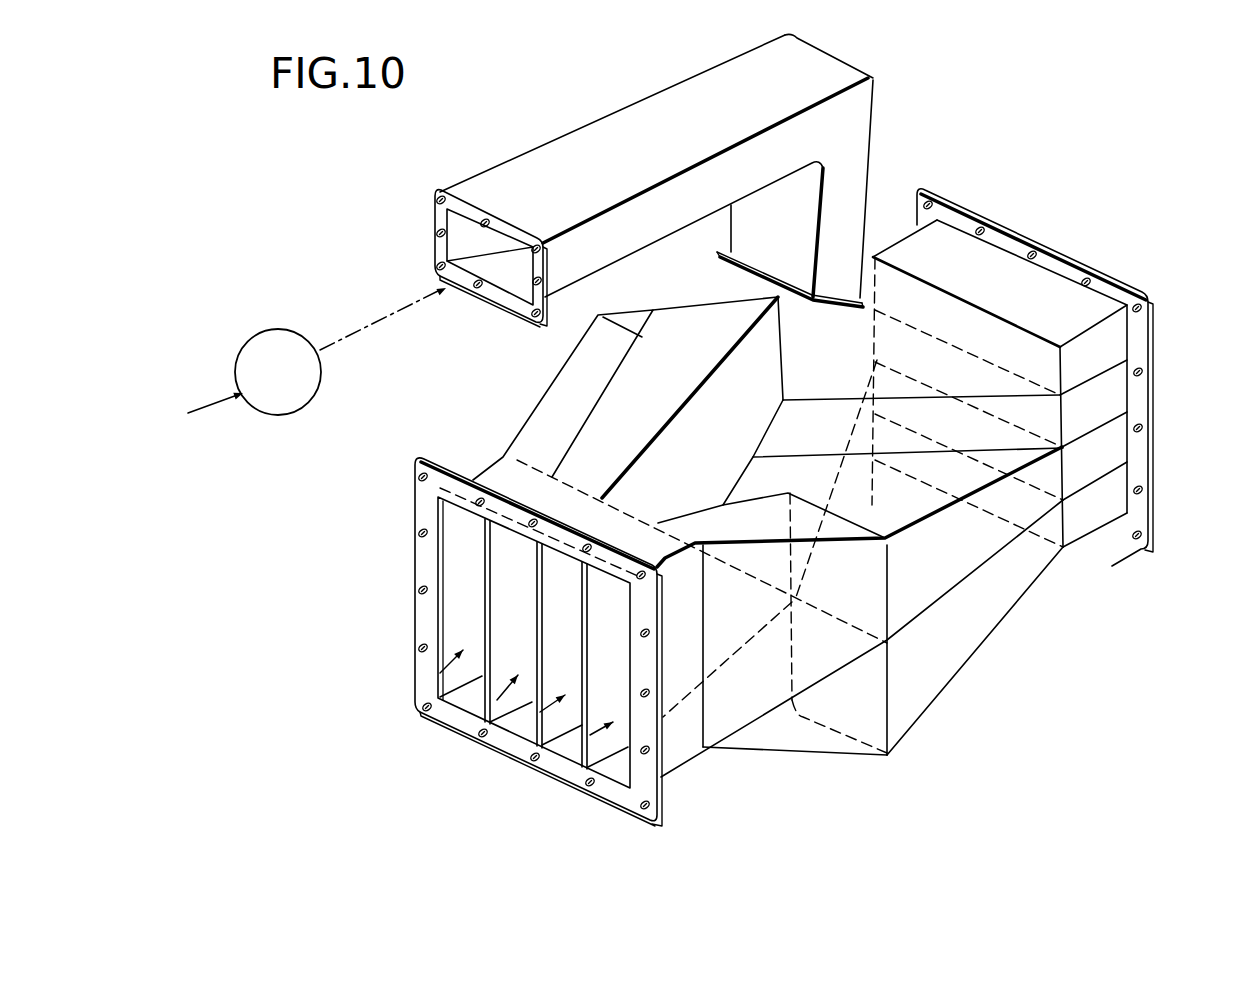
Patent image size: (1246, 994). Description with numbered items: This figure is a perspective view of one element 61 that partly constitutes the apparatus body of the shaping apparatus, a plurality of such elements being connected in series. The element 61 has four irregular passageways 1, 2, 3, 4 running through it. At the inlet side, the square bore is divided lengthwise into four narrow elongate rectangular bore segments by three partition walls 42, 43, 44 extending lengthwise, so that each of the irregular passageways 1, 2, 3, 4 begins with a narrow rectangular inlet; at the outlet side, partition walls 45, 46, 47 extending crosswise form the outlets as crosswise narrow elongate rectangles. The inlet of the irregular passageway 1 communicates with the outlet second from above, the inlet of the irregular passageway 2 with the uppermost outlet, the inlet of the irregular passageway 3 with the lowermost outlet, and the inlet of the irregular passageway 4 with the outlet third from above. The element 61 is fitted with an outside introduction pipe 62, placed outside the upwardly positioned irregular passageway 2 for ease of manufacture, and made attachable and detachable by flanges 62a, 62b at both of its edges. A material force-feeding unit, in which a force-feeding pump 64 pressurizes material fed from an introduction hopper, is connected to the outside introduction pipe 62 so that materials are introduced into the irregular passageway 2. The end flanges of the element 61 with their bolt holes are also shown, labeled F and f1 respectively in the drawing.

The irregular passageway 1 is at (440, 697).
The irregular passageway 2 is at (492, 722).
The irregular passageway 3 is at (550, 739).
The irregular passageway 4 is at (608, 762).
The partition wall 42 is at (482, 718).
The partition wall 43 is at (538, 722).
The partition wall 44 is at (588, 736).
The partition wall 45 is at (1023, 378).
The partition wall 46 is at (1027, 430).
The partition wall 47 is at (1037, 485).
The element 61 is at (917, 292).
The outside introduction pipe 62 is at (658, 113).
The flange 62a is at (766, 268).
The flange 62b is at (436, 240).
The force-feeding pump 64 is at (283, 330).
The flange F is at (441, 462).
The bolt hole f1 is at (1142, 533).